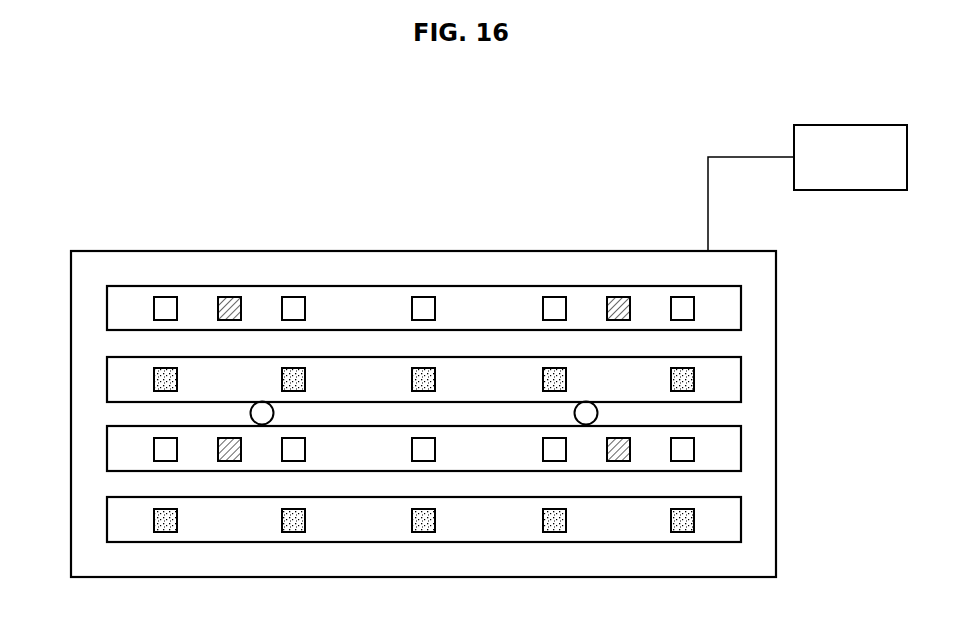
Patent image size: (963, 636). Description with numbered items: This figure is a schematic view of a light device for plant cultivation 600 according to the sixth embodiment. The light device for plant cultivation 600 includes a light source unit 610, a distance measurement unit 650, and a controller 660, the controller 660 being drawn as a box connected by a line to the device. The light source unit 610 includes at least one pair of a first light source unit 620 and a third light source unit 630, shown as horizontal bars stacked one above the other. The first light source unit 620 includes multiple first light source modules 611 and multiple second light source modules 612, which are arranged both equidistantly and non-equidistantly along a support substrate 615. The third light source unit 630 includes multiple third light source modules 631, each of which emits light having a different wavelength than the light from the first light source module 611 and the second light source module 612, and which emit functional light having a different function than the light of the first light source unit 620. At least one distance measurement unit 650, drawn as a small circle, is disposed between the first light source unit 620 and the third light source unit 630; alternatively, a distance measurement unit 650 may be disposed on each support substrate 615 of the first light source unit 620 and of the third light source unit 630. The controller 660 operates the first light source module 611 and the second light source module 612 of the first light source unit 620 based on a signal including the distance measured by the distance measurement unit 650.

The light device for plant cultivation 600 is at (60, 124).
The controller 660 is at (847, 125).
The light source unit 610 is at (506, 329).
The first light source unit 620 is at (476, 273).
The third light source unit 630 is at (476, 400).
The support substrate 615 is at (488, 303).
The first light source module 611 is at (551, 297).
The second light source module 612 is at (615, 297).
The third light source module 631 is at (695, 378).
The distance measurement unit 650 is at (585, 425).